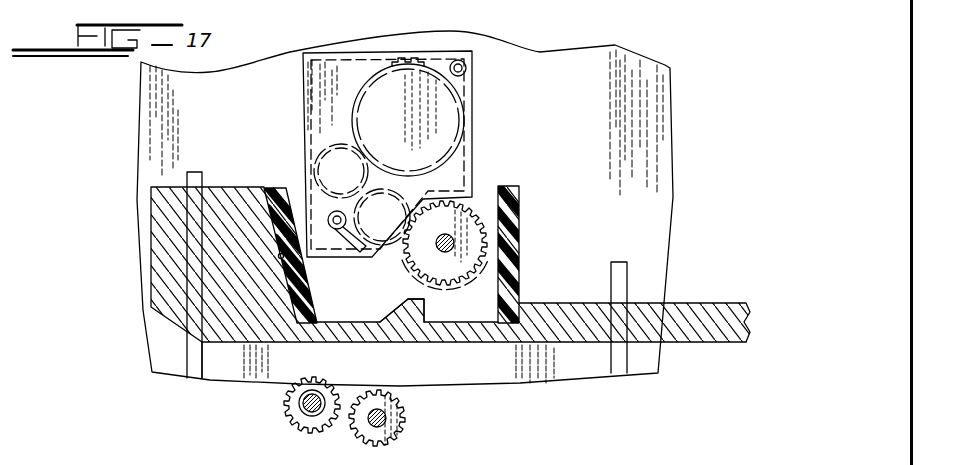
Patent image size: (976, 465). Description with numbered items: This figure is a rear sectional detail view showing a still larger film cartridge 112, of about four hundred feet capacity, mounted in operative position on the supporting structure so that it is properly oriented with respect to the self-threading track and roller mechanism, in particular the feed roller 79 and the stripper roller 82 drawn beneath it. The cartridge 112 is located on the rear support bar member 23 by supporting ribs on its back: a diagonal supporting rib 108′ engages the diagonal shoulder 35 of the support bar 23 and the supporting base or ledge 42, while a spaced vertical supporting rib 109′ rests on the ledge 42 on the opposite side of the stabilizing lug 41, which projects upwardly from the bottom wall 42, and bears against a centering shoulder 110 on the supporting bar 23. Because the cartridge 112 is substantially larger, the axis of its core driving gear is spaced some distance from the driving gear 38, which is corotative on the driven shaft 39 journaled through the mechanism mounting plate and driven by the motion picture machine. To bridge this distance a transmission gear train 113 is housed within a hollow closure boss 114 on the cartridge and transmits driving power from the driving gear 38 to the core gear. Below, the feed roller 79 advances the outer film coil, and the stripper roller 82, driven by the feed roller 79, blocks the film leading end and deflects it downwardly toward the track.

The cartridge 112 is at (679, 106).
The hollow closure boss 114 is at (457, 167).
The supporting rib 108′ is at (283, 195).
The driving gear 38 is at (449, 238).
The diagonal lead-in wall 35 is at (278, 256).
The support bar member 23 is at (167, 277).
The transmission gear train 113 is at (358, 282).
The driven shaft 39 is at (440, 250).
The supporting rib 109′ is at (518, 273).
The centering shoulder 110 is at (519, 300).
The stabilizing lug 41 is at (407, 313).
The bottom wall 42 is at (464, 322).
The stripper roller 82 is at (281, 397).
The feed roller 79 is at (400, 418).